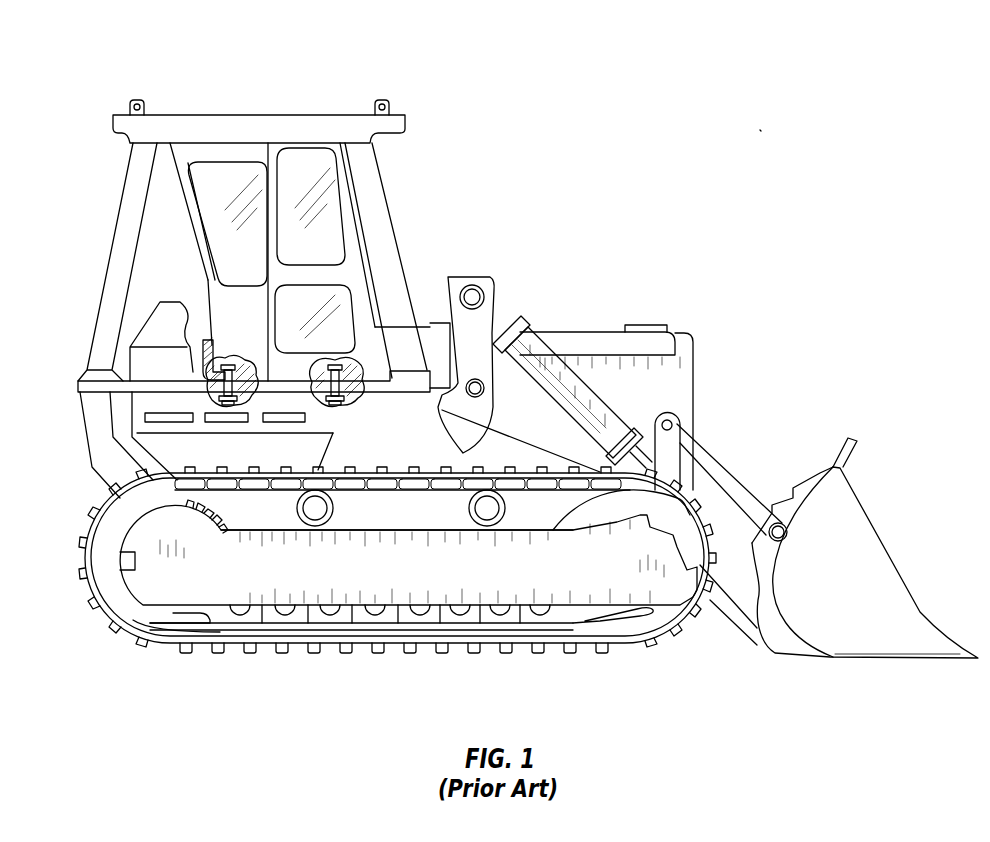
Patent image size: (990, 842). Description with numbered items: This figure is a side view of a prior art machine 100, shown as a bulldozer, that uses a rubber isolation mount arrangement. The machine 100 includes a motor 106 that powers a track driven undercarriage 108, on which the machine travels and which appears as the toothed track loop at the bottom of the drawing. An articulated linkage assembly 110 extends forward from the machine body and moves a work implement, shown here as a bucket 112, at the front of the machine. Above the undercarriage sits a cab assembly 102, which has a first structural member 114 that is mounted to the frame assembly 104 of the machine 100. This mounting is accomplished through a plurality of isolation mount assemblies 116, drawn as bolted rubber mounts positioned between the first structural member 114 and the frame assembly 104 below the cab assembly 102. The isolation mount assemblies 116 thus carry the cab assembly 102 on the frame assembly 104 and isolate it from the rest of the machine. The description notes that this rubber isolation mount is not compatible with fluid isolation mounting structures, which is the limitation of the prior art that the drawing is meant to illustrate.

The machine 100 is at (758, 132).
The cab assembly 102 is at (389, 206).
The frame assembly 104 is at (197, 394).
The motor 106 is at (569, 330).
The track driven undercarriage 108 is at (436, 577).
The articulated linkage assembly 110 is at (727, 466).
The bucket 112 is at (895, 560).
The first structural member 114 is at (218, 360).
The isolation mount assemblies 116 is at (236, 408).